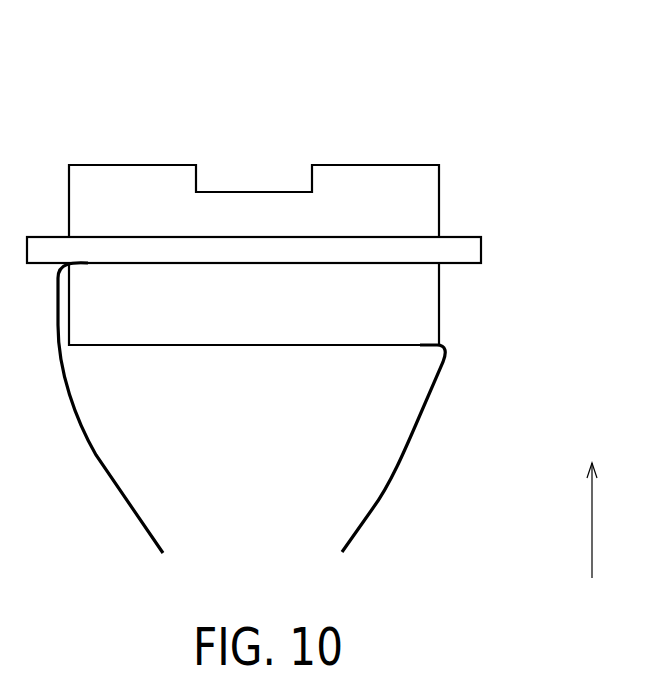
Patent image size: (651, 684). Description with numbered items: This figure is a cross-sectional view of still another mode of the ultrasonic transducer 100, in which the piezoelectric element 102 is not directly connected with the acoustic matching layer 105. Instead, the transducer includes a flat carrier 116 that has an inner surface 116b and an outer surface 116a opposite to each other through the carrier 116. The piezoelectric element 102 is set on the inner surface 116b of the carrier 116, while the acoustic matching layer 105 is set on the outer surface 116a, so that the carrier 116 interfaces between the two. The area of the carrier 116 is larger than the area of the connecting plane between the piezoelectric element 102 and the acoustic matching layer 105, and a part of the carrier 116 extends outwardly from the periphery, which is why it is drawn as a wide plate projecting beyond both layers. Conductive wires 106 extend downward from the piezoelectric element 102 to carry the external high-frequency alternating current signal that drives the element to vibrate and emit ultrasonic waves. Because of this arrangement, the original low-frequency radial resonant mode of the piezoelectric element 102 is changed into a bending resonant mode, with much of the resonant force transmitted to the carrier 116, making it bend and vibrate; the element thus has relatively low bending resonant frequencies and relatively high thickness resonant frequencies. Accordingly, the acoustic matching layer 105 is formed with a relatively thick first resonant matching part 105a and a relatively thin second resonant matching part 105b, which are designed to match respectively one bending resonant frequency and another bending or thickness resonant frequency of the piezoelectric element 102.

The ultrasonic transducer 100 is at (377, 90).
The piezoelectric element 102 is at (272, 318).
The acoustic matching layer 105 is at (273, 226).
The first resonant matching part 105a is at (128, 181).
The second resonant matching part 105b is at (230, 196).
The conductive wires 106 is at (130, 522).
The carrier 116 is at (470, 248).
The outer surface 116a is at (467, 235).
The inner surface 116b is at (467, 266).